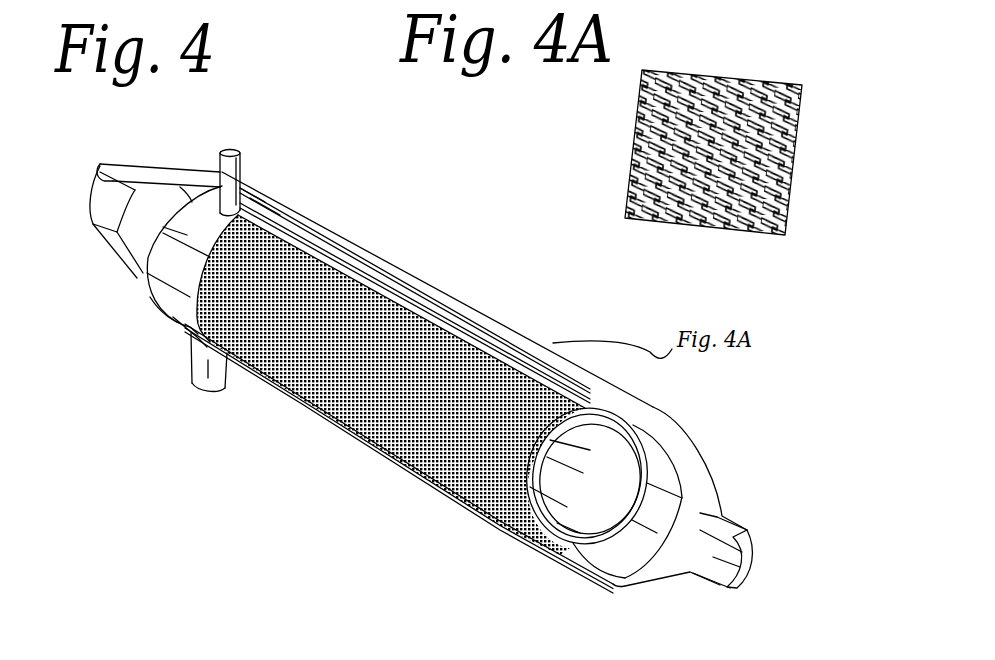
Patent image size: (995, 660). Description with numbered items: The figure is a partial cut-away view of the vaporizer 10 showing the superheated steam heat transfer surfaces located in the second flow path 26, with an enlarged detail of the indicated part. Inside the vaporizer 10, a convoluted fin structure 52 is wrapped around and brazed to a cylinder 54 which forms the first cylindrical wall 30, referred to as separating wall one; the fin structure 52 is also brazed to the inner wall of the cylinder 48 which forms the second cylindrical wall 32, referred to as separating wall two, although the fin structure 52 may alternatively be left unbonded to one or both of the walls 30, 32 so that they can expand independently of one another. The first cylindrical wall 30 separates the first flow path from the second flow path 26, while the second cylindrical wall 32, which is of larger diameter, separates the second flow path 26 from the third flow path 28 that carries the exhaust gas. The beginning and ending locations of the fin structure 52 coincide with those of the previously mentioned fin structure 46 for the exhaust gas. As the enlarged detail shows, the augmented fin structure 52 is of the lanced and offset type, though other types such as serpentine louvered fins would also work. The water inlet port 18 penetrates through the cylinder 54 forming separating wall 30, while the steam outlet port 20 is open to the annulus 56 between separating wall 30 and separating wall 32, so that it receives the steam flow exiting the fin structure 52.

In FIG. 4, the vaporizer 10 is at (483, 285).
In FIG. 4, the water inlet port 18 is at (237, 148).
In FIG. 4, the steam outlet port 20 is at (208, 388).
In FIG. 4, the second flow path 26 is at (365, 405).
In FIG. 4, the third flow path 28 is at (257, 208).
In FIG. 4, the first cylindrical wall 30 is at (183, 312).
In FIG. 4, the second cylindrical wall 32 is at (500, 357).
In FIG. 4, the fin structure 46 is at (378, 278).
In FIG. 4, the cylinder 48 is at (240, 204).
In FIG. 4, the convoluted fin structure 52 is at (463, 495).
In FIG. 4A, the convoluted fin structure 52 is at (782, 190).
In FIG. 4, the cylinder 54 is at (143, 283).
In FIG. 4, the annulus 56 is at (185, 178).